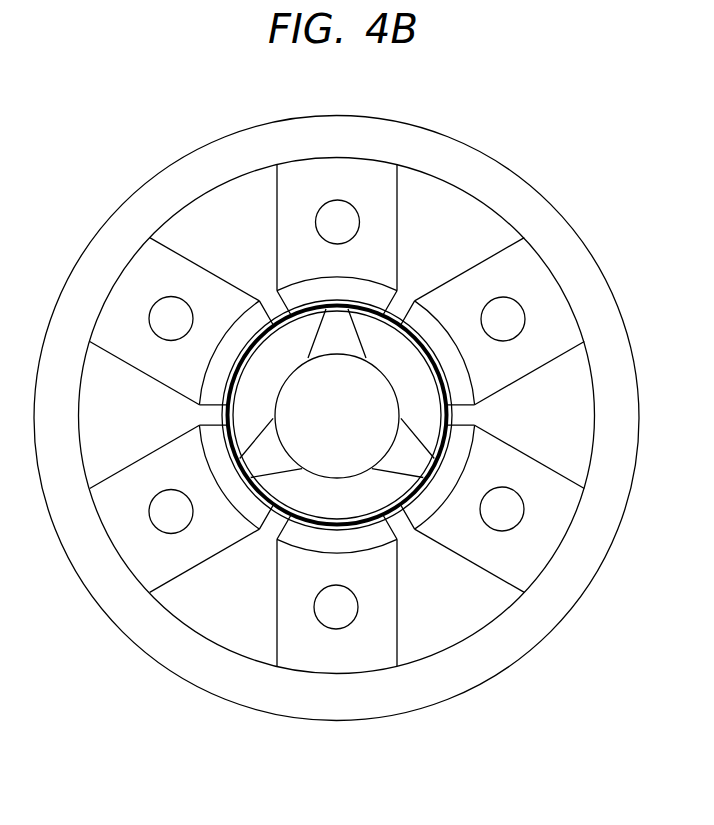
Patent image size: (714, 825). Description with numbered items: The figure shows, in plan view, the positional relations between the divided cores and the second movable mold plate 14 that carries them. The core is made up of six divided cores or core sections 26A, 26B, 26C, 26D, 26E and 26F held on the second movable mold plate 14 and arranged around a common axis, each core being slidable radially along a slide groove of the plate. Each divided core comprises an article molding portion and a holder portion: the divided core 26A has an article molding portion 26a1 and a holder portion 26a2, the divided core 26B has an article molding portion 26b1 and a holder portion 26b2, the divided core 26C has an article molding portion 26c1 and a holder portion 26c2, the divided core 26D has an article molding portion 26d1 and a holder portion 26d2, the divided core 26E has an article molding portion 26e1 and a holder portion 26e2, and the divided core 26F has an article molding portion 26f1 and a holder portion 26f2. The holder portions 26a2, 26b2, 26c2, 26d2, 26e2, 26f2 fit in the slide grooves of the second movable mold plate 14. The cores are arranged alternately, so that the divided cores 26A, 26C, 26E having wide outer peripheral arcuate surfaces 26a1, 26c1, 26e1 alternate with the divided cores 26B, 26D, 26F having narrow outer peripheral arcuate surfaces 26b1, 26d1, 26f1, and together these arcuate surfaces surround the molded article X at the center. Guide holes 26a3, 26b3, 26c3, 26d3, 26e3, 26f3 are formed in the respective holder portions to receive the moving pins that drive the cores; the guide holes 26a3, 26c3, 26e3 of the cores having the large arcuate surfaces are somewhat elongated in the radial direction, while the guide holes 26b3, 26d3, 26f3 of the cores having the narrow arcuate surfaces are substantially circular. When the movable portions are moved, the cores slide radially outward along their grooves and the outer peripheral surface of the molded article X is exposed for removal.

The second movable mold plate 14 is at (187, 667).
The divided core 26A is at (337, 651).
The article molding portion 26a1 is at (360, 515).
The holder portion 26a2 is at (292, 663).
The guide hole 26a3 is at (330, 622).
The divided core 26B is at (169, 535).
The article molding portion 26b1 is at (268, 465).
The holder portion 26b2 is at (123, 485).
The guide hole 26b3 is at (178, 520).
The divided core 26C is at (146, 287).
The article molding portion 26c1 is at (217, 380).
The holder portion 26c2 is at (110, 310).
The guide hole 26c3 is at (167, 305).
The divided core 26D is at (357, 193).
The article molding portion 26d1 is at (348, 303).
The holder portion 26d2 is at (303, 172).
The guide hole 26d3 is at (347, 212).
The divided core 26E is at (543, 290).
The article molding portion 26e1 is at (482, 385).
The holder portion 26e2 is at (548, 290).
The guide hole 26e3 is at (507, 322).
The divided core 26F is at (500, 540).
The article molding portion 26f1 is at (433, 490).
The holder portion 26f2 is at (528, 568).
The guide hole 26f3 is at (503, 502).
The molded article X is at (267, 520).